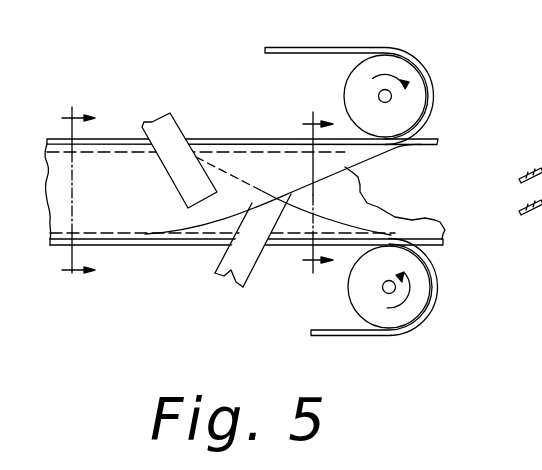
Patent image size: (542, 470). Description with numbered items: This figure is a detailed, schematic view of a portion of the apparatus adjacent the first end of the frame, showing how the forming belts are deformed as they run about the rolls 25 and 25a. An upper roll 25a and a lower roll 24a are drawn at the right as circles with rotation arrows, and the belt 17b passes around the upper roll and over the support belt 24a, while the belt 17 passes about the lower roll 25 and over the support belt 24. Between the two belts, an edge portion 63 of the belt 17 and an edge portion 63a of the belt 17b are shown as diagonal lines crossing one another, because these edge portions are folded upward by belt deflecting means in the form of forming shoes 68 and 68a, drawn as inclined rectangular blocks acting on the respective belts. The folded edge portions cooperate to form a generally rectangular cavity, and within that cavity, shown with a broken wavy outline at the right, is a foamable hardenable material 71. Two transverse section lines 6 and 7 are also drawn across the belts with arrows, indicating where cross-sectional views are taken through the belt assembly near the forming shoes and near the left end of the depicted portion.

The section line 6- 6 is at (320, 194).
The section line 7- 7 is at (80, 195).
The belt 17 is at (436, 236).
The belt 17b is at (436, 138).
The support belt 24 is at (437, 292).
The support belt 24a is at (424, 70).
The roll 25 is at (407, 308).
The roll 25a is at (404, 35).
The edge portion 63 is at (215, 223).
The edge portion 63a is at (297, 163).
The forming shoe 68 is at (239, 274).
The forming shoe 68a is at (183, 95).
The foamable hardenable material 71 is at (360, 203).